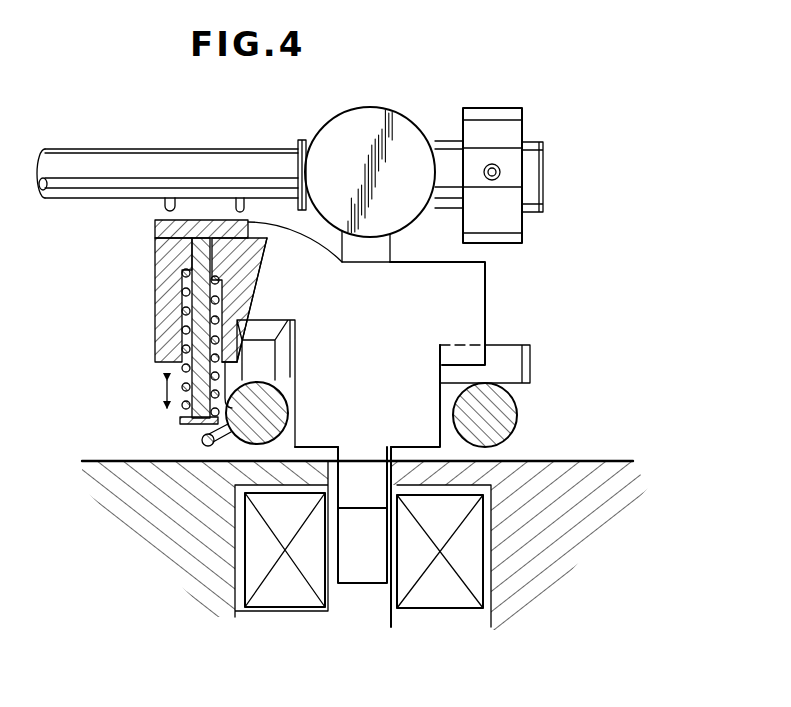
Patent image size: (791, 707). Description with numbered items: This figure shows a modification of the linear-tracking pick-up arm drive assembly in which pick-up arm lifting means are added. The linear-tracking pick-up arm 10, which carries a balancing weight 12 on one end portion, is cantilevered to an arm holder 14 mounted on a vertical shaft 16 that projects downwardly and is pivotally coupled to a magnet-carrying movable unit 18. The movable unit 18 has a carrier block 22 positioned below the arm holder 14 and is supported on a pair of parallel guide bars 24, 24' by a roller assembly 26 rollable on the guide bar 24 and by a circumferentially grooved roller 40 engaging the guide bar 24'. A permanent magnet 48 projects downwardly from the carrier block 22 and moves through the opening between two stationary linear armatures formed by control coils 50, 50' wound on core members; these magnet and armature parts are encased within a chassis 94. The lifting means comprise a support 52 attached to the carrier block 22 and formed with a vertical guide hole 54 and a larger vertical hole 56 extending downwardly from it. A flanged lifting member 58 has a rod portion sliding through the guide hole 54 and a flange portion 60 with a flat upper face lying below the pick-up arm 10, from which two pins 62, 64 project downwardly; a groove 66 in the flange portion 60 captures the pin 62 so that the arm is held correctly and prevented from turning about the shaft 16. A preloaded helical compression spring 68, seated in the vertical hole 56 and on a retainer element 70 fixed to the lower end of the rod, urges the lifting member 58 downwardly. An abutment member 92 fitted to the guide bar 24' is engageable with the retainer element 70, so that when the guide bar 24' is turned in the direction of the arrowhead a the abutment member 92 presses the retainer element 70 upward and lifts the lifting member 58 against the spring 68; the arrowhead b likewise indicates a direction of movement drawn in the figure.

The linear-tracking pick-up arm 10 is at (170, 149).
The balancing weight 12 is at (502, 118).
The arm holder 14 is at (405, 122).
The vertical shaft 16 is at (392, 249).
The magnet-carrying movable unit 18 is at (355, 604).
The carrier block 22 is at (379, 356).
The guide bar 24 is at (512, 415).
The guide bar 24' is at (289, 413).
The roller assembly 26 is at (540, 372).
The circumferentially grooved roller 40 is at (278, 327).
The permanent magnet 48 is at (381, 586).
The control coil 50 is at (437, 551).
The control coil 50' is at (284, 573).
The support 52 is at (155, 294).
The vertical guide hole 54 is at (196, 252).
The vertical hole 56 is at (182, 323).
The flanged lifting member 58 is at (180, 380).
The flange portion 60 is at (155, 232).
The pin 62 is at (239, 198).
The pin 64 is at (162, 204).
The groove 66 is at (274, 224).
The preloaded helical compression spring 68 is at (185, 408).
The retainer element 70 is at (184, 425).
The abutment member 92 is at (207, 449).
The chassis 94 is at (600, 461).
The arrowhead a is at (188, 432).
The direction b is at (197, 451).